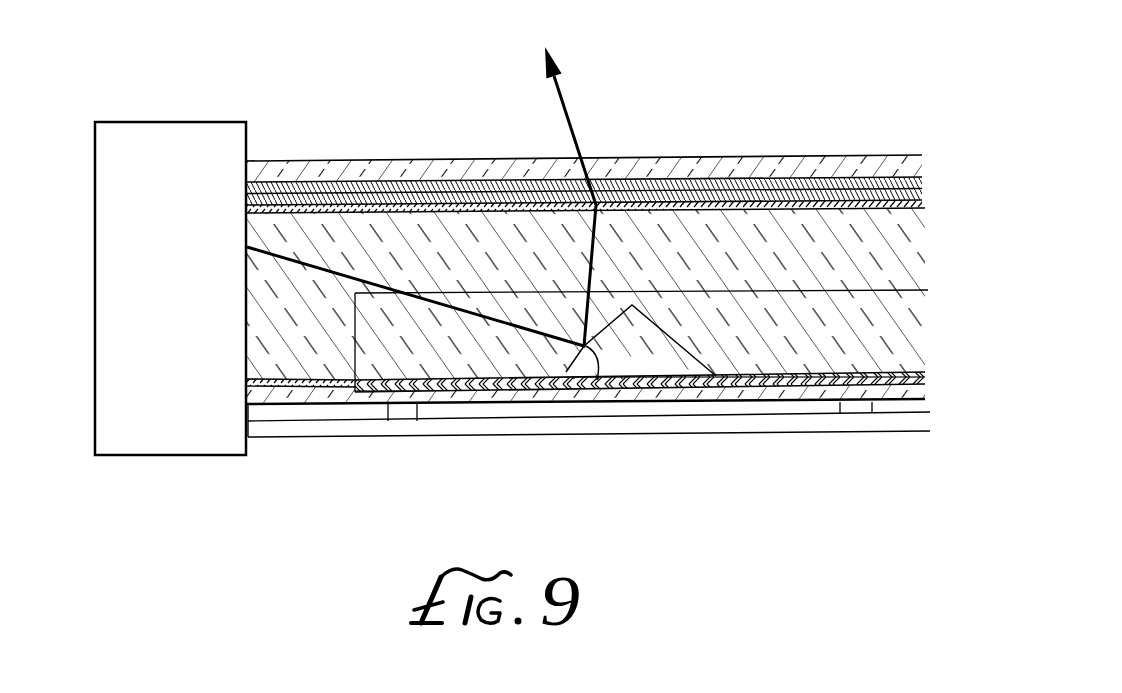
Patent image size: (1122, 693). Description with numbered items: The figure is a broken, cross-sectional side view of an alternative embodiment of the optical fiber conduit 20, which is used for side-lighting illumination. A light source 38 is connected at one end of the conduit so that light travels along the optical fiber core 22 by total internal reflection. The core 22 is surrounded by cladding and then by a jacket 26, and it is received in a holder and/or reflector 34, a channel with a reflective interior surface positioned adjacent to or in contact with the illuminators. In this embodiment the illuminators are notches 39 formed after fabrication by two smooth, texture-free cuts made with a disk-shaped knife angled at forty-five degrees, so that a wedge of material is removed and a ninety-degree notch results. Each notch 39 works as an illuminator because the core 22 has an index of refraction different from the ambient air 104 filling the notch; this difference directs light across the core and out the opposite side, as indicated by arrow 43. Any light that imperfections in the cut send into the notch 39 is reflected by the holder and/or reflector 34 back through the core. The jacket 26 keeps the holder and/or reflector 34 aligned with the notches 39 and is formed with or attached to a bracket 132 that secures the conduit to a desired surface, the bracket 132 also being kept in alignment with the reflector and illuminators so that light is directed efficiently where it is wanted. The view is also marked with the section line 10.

The section line 10- 10 is at (620, 272).
The optical fiber conduit 20 is at (848, 452).
The optical fiber core 22 is at (912, 240).
The jacket 26 is at (917, 397).
The holder and/or reflector 34 is at (915, 370).
The light source 38 is at (175, 447).
The notch 39 is at (588, 387).
The arrow 43 is at (573, 122).
The ambient air 104 is at (652, 355).
The bracket 132 is at (913, 422).